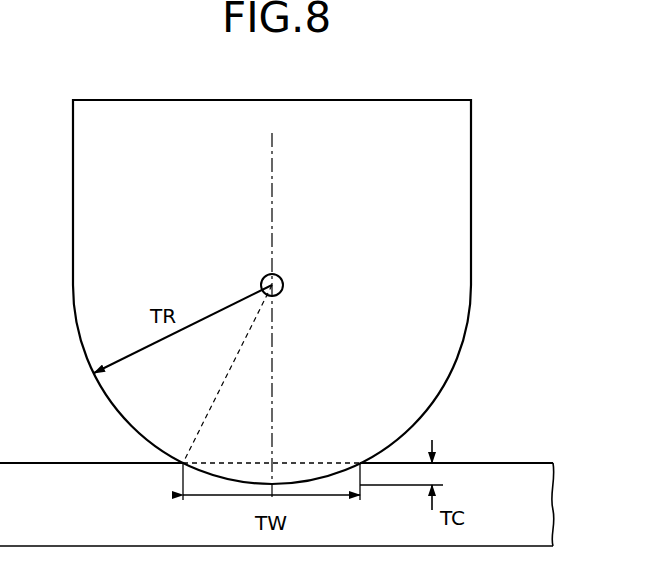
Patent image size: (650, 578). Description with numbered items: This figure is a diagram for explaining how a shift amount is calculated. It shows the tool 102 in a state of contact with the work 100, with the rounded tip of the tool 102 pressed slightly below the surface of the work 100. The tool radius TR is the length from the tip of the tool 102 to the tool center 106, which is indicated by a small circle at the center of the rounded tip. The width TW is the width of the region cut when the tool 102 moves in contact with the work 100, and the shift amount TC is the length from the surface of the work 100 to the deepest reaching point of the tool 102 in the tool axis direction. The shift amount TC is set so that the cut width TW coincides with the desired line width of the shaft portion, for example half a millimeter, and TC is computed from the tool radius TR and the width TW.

The work 100 is at (523, 463).
The tool 102 is at (460, 201).
The tool center 106 is at (265, 278).